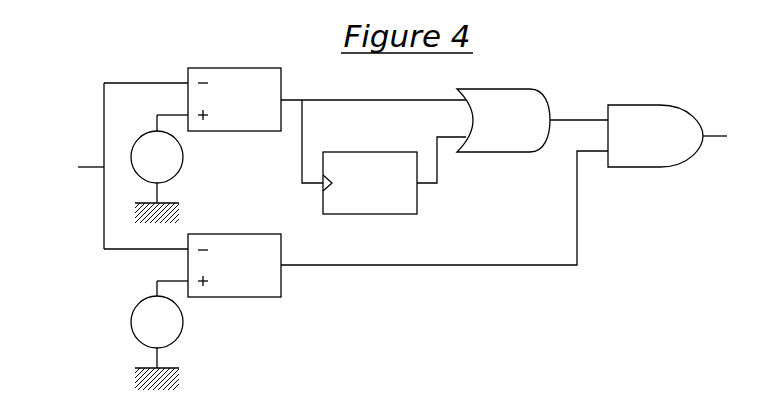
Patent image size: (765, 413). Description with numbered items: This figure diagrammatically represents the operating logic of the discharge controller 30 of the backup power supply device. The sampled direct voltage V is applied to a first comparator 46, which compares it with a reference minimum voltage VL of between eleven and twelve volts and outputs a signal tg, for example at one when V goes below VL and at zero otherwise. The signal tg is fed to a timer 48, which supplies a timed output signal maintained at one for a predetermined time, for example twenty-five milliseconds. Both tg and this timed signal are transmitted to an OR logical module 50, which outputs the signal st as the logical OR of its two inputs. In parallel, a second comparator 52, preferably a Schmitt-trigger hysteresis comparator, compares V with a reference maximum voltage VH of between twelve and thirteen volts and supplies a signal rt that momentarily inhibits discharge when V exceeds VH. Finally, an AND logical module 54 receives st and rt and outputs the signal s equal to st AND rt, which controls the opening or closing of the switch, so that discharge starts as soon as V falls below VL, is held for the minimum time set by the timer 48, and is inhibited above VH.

The controller 30 is at (483, 291).
The first comparator 46 is at (234, 99).
The timer 48 is at (370, 183).
The OR logical module 50 is at (503, 120).
The second comparator 52 is at (234, 265).
The AND logical module 54 is at (655, 136).